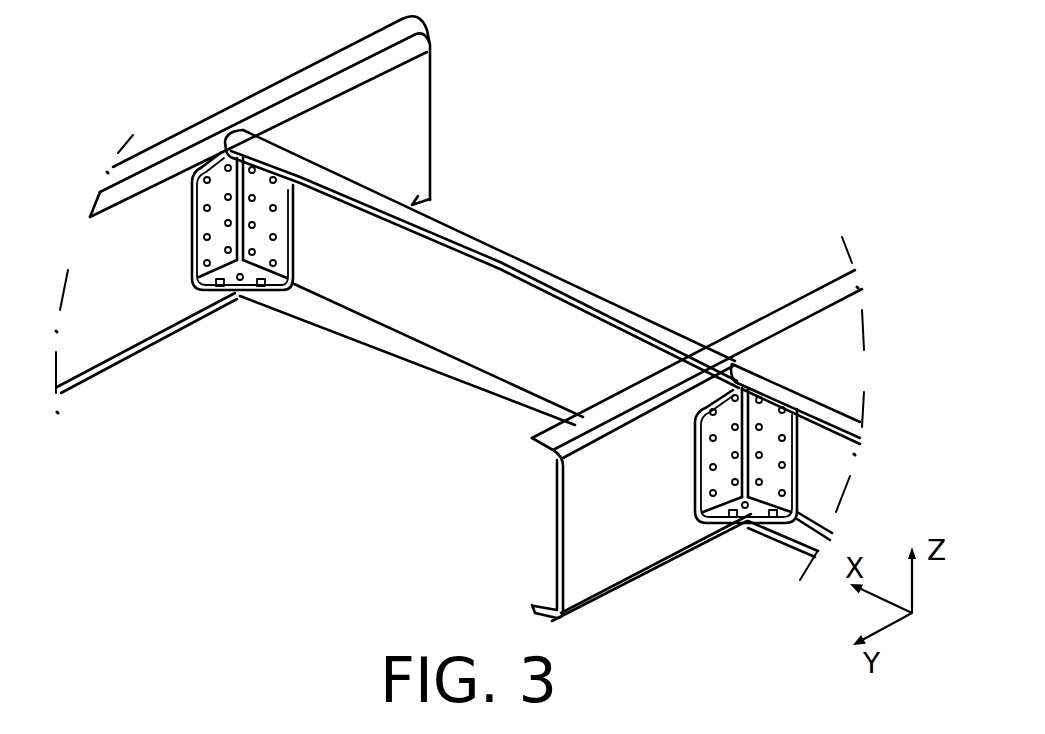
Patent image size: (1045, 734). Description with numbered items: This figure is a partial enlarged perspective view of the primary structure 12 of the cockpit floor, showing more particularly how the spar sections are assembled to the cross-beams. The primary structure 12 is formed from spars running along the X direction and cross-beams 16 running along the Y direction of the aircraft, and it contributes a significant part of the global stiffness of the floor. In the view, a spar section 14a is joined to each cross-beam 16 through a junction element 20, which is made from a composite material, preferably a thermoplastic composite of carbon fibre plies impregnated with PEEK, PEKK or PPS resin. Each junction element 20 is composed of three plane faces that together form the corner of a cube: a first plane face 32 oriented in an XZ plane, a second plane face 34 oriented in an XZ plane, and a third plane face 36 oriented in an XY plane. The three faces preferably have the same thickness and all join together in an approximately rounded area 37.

The primary structure 12 is at (762, 93).
The spar section 14a is at (514, 307).
The cross-beam 16 is at (400, 135).
The junction element 20 is at (774, 409).
The first plane face 32 is at (283, 227).
The second plane face 34 is at (213, 218).
The third plane face 36 is at (259, 288).
The rounded area 37 is at (236, 283).